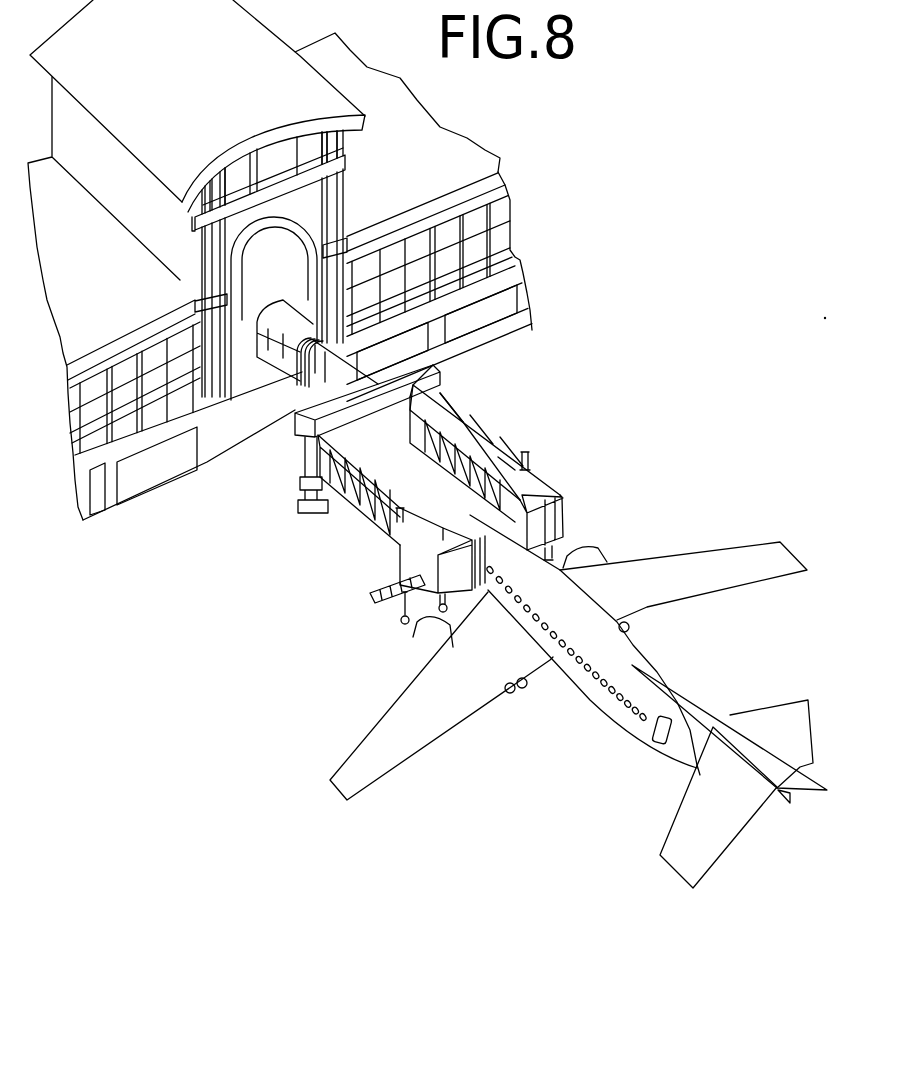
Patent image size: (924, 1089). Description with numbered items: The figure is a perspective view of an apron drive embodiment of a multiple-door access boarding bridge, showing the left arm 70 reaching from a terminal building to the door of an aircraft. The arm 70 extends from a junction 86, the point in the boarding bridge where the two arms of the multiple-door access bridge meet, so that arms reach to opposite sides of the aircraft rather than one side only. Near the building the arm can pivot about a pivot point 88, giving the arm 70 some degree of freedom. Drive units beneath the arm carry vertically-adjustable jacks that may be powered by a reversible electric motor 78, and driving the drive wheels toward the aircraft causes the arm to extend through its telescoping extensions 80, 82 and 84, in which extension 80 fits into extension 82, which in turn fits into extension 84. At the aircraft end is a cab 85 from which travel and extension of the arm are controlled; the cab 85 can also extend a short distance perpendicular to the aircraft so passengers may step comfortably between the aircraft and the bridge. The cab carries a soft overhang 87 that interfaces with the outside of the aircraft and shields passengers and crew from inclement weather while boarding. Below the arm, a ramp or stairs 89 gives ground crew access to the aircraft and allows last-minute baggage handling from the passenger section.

The left arm 70 is at (530, 408).
The reversible electric motor 78 is at (525, 458).
The extension 80 is at (440, 398).
The extension 82 is at (470, 417).
The extension 84 is at (498, 457).
The cab 85 is at (560, 500).
The junction 86 is at (300, 440).
The soft overhang 87 is at (520, 508).
The pivot point 88 is at (317, 414).
The ramp or stairs 89 is at (380, 610).